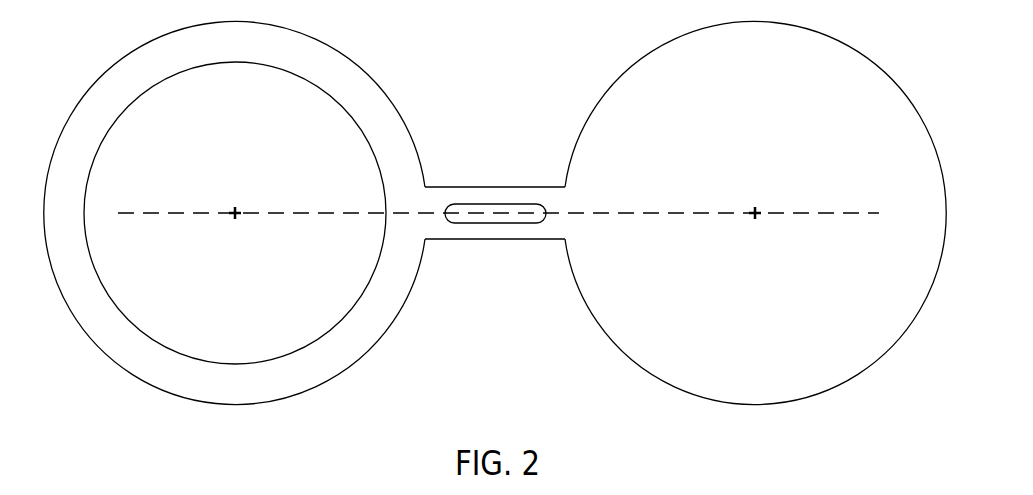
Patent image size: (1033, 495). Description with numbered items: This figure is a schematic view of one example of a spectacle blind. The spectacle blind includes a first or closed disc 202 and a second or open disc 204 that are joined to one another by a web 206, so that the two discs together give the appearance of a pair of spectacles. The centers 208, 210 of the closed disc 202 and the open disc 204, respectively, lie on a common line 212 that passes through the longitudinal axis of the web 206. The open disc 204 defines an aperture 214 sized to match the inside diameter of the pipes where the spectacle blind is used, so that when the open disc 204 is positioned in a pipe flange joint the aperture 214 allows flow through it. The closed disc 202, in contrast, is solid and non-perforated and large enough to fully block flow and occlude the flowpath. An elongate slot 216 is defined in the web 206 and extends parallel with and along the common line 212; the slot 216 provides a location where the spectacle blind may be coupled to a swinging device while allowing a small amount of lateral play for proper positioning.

The closed disc 202 is at (852, 67).
The open disc 204 is at (143, 370).
The web 206 is at (487, 193).
The center of closed disc 208 is at (758, 218).
The center of open disc 210 is at (237, 217).
The common line 212 is at (147, 212).
The aperture 214 is at (307, 103).
The elongate slot 216 is at (512, 218).